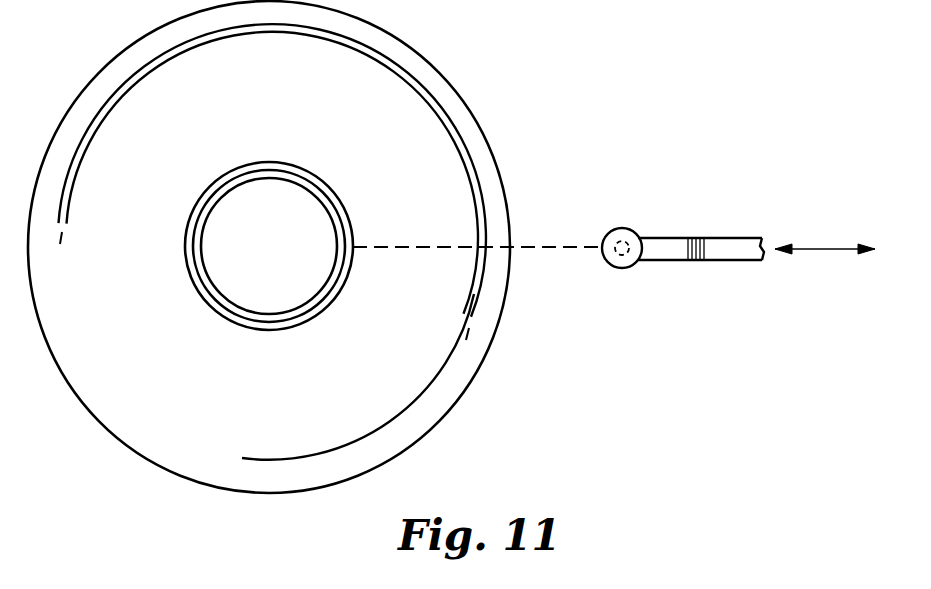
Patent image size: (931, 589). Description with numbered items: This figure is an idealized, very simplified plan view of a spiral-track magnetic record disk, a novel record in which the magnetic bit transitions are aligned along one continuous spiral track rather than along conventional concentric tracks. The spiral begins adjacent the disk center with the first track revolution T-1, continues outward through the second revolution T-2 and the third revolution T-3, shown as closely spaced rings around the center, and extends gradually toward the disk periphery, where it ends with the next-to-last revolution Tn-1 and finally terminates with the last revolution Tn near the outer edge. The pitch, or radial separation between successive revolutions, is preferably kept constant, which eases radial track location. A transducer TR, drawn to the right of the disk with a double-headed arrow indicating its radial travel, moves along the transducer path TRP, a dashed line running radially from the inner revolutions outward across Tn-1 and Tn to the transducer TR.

The last track revolution Tn is at (482, 204).
The next-to-last track revolution Tn-1 is at (430, 103).
The transducer path TRP is at (390, 243).
The first track revolution T-1 is at (285, 204).
The second track revolution T-2 is at (333, 283).
The third track revolution T-3 is at (269, 332).
The transducer TR is at (717, 212).